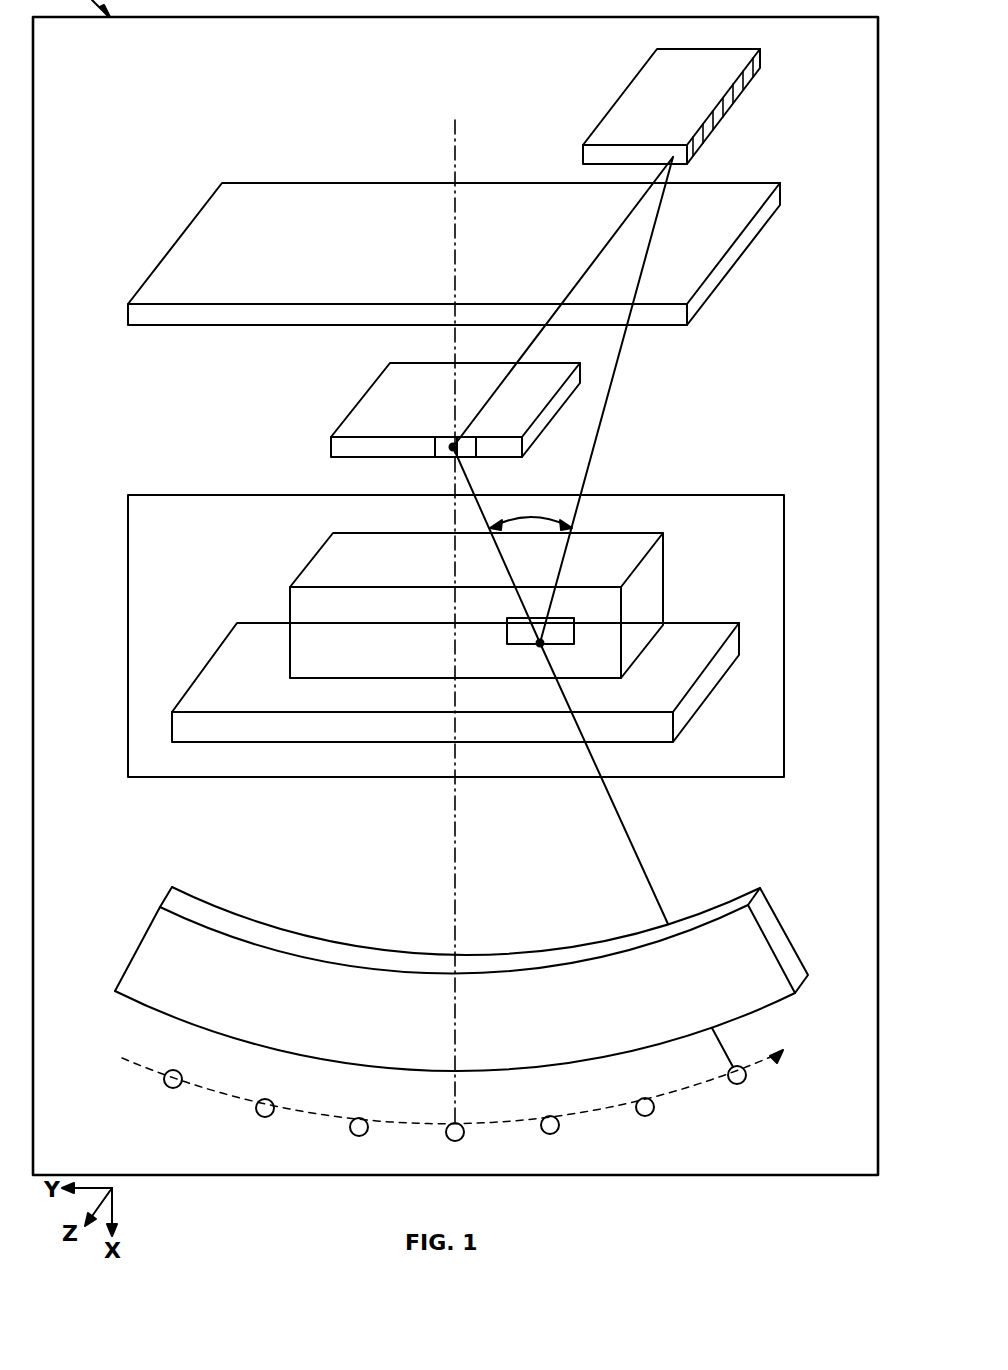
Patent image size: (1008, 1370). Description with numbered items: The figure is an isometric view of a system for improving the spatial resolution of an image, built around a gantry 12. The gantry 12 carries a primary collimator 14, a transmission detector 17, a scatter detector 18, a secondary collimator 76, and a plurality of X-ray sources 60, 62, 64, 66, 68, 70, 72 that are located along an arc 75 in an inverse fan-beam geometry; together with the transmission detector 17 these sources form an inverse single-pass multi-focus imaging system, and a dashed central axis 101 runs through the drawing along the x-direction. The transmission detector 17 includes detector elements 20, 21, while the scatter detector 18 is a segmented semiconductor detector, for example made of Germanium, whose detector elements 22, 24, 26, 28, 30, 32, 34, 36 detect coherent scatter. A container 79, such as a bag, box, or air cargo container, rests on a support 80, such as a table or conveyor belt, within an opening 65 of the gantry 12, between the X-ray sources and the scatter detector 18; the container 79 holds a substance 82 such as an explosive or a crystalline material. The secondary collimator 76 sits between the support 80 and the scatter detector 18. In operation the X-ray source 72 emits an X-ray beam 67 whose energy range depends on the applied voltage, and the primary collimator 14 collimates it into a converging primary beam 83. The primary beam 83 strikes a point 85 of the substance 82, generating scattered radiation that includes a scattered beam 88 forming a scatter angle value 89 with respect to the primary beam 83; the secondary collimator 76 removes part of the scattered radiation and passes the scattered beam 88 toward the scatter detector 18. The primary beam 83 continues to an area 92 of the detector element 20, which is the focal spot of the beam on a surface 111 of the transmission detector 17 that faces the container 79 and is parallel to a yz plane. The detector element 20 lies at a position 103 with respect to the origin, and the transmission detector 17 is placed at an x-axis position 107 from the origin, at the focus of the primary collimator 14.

The gantry 12 is at (830, 1176).
The primary collimator 14 is at (785, 930).
The transmission detector 17 is at (328, 440).
The scatter detector 18 is at (619, 98).
The detector element 20 is at (448, 446).
The detector element 21 is at (468, 447).
The detector element 22 is at (693, 150).
The detector element 24 is at (702, 138).
The detector element 26 is at (715, 127).
The detector element 28 is at (723, 115).
The detector element 30 is at (733, 100).
The detector element 32 is at (740, 90).
The detector element 34 is at (750, 75).
The detector element 36 is at (760, 63).
The X-ray source 60 is at (175, 1088).
The X-ray source 62 is at (267, 1117).
The X-ray source 64 is at (361, 1136).
The X-ray source 66 is at (457, 1141).
The X-ray source 68 is at (552, 1134).
The X-ray source 70 is at (647, 1116).
The X-ray source 72 is at (739, 1084).
The arc 75 is at (775, 1072).
The secondary collimator 76 is at (718, 275).
The container 79 is at (665, 588).
The support 80 is at (710, 698).
The substance 82 is at (507, 631).
The primary beam 83 is at (628, 833).
The point 85 is at (543, 645).
The scattered beam 88 is at (610, 395).
The scatter angle value 89 is at (547, 524).
The area 92 is at (447, 452).
The central axis 101 is at (458, 878).
The position 103 is at (433, 444).
The x-axis position 107 is at (312, 456).
The surface 111 is at (374, 459).
The opening 65 is at (733, 780).
The X-ray beam 67 is at (730, 1053).